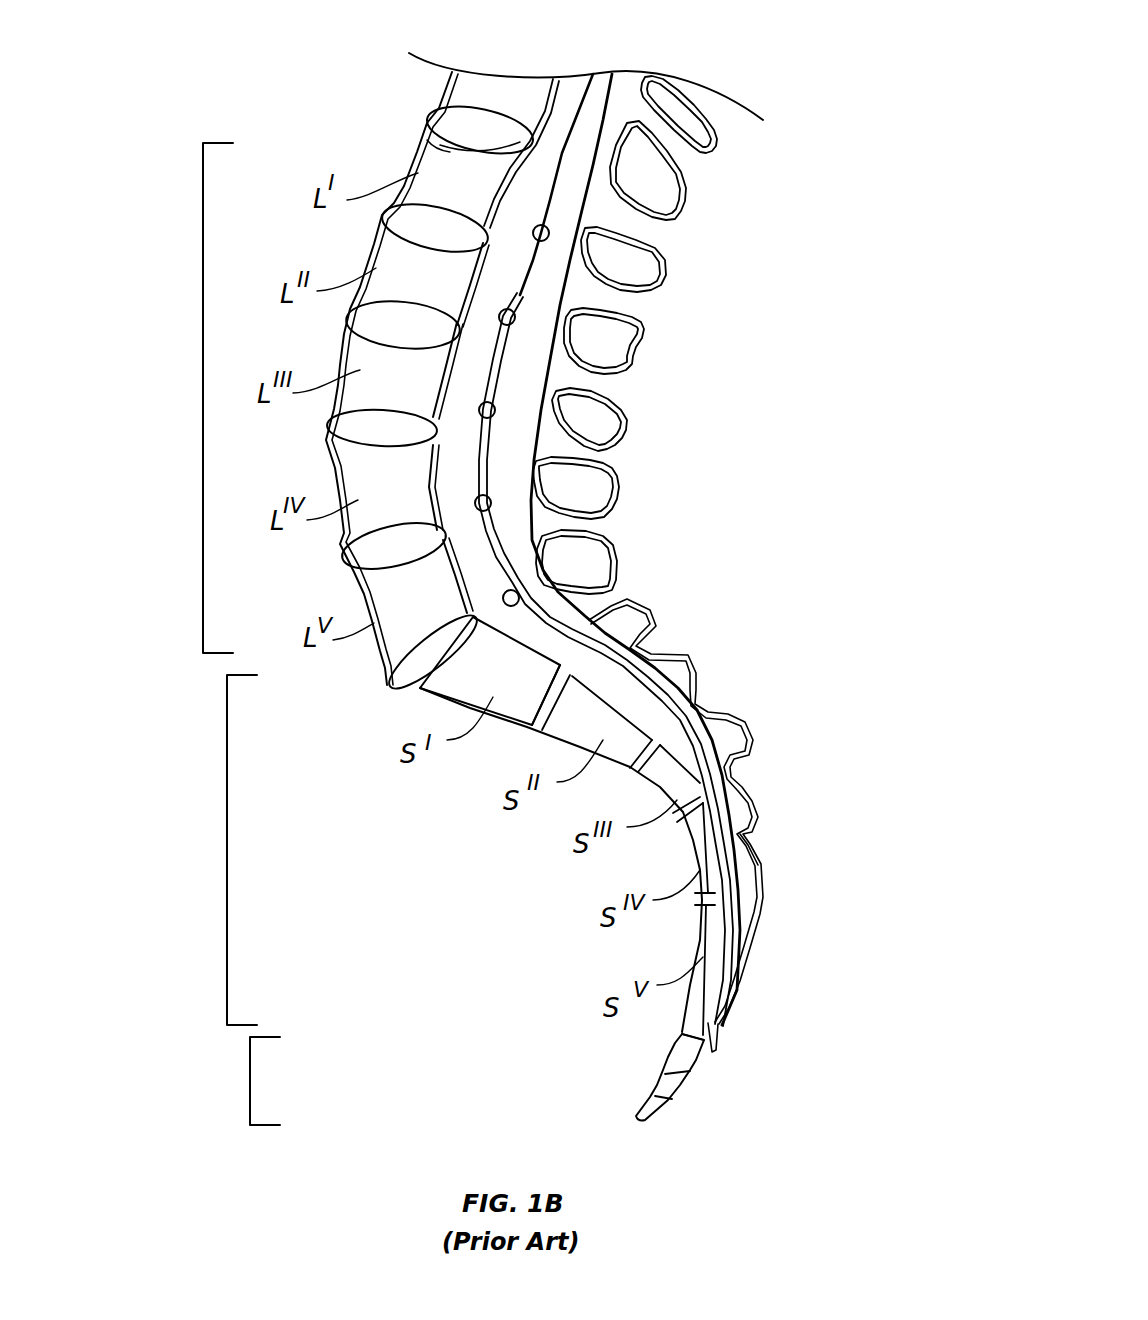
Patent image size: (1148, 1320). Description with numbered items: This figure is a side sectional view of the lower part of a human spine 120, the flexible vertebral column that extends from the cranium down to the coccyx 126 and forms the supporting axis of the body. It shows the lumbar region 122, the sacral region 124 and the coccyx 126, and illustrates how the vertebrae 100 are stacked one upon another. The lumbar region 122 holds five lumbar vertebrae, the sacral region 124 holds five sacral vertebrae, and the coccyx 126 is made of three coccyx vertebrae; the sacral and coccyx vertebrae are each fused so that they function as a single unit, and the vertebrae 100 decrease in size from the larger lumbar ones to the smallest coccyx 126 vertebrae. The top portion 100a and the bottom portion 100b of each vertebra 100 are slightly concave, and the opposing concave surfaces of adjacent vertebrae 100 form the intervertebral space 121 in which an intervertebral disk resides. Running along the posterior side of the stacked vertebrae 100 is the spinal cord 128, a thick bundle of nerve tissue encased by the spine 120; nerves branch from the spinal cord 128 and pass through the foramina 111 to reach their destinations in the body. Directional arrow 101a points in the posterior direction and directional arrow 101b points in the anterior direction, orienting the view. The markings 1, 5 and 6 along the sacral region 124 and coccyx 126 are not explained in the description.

The vertebrae 100 is at (483, 198).
The top portion 100a is at (487, 148).
The bottom portion 100b is at (428, 146).
The intervertebral space 121 is at (433, 114).
The foramina 111 is at (515, 320).
The spinal cord 128 is at (598, 88).
The spine 120 is at (826, 68).
The lumbar region 122 is at (203, 398).
The sacral region 124 is at (225, 868).
The coccyx 126 is at (250, 1087).
The directional arrow 101a is at (855, 592).
The directional arrow 101b is at (158, 592).
The first sacral vertebra posterior surface 1 is at (693, 708).
The fifth sacral vertebra posterior surface 5 is at (742, 834).
The sacral apex 6 is at (717, 1025).